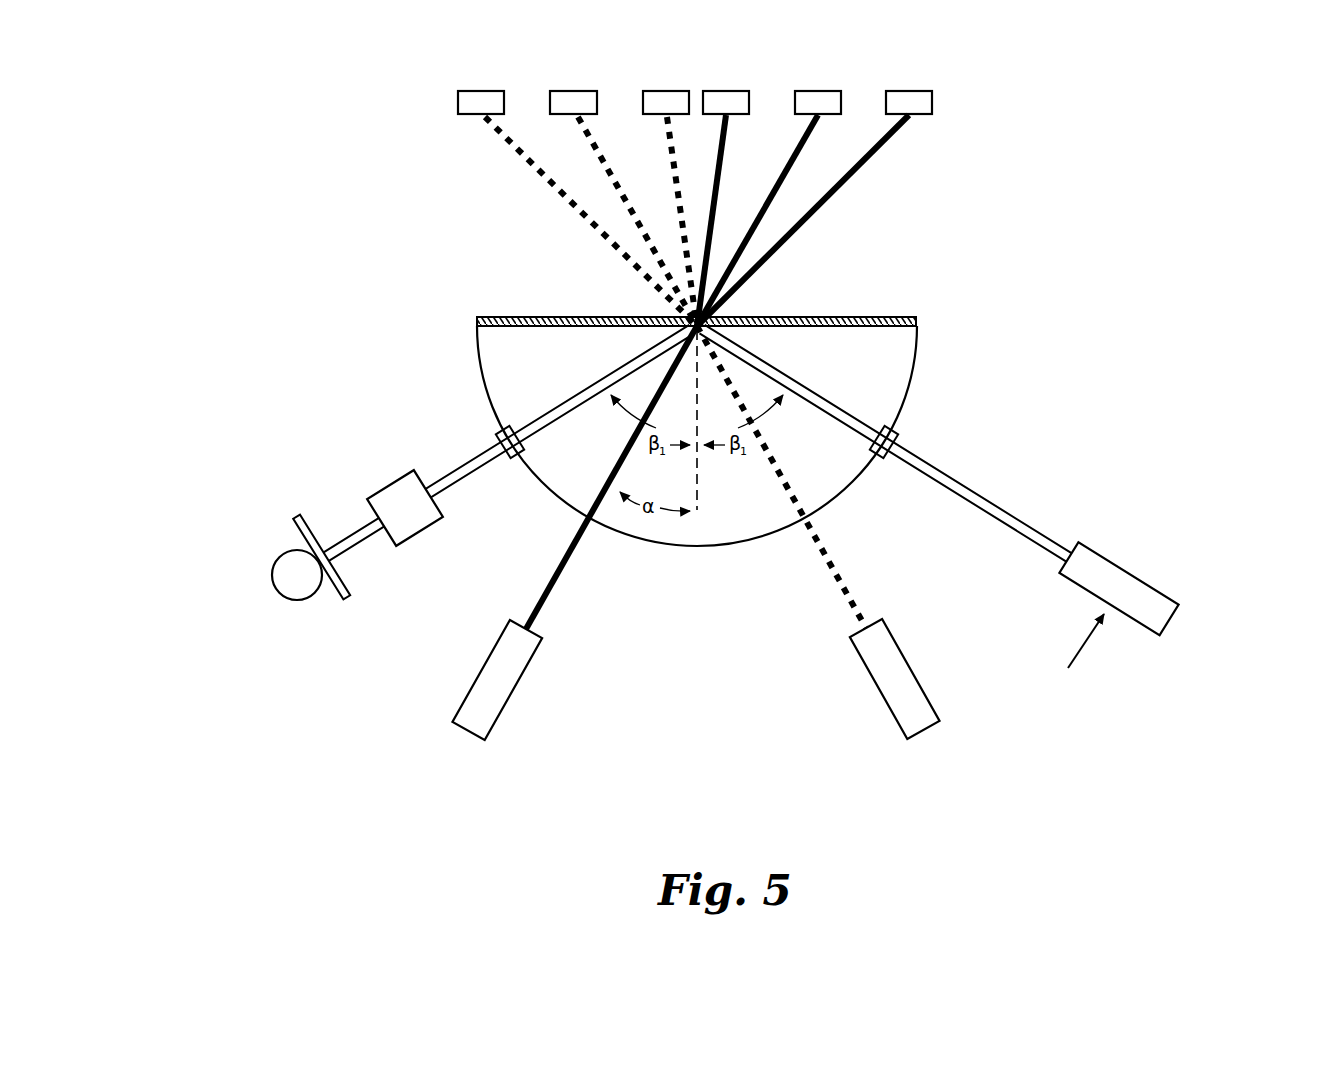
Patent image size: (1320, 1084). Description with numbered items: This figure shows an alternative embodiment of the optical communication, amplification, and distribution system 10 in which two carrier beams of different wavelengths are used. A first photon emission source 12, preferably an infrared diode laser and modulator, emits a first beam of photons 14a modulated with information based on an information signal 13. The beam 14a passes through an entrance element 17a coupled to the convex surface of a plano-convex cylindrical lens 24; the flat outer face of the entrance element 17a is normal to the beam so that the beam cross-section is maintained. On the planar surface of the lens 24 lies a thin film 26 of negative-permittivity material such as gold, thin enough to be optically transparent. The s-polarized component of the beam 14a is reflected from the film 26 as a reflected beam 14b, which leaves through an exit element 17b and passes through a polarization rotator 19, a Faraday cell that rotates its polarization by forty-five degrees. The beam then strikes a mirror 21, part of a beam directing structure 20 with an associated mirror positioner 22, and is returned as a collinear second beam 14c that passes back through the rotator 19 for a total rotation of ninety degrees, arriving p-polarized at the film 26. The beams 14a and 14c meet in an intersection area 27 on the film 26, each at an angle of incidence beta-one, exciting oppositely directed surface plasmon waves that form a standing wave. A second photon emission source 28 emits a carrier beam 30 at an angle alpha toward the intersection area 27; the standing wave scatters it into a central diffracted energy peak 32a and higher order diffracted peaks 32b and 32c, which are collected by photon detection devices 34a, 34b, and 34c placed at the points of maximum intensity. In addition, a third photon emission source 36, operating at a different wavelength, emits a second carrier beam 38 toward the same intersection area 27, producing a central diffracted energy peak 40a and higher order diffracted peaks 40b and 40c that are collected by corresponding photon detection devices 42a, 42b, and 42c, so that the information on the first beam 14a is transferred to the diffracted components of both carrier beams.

The optical communication, amplification, and distribution system 10 is at (1232, 168).
The first photon emission source 12 is at (1120, 564).
The information signal 13 is at (1082, 642).
The first beam of photons 14a is at (965, 486).
The reflected beam 14b is at (508, 443).
The second beam of photons 14c is at (452, 472).
The entrance element 17a is at (897, 445).
The exit element 17b is at (497, 435).
The polarization rotator 19 is at (386, 488).
The beam directing structure 20 is at (437, 479).
The mirror 21 is at (338, 598).
The mirror positioner 22 is at (272, 572).
The plano-convex cylindrical lens 24 is at (908, 392).
The thin film 26 is at (916, 320).
The intersection area 27 is at (730, 316).
The second photon emission source 28 is at (505, 718).
The carrier beam 30 is at (542, 612).
The central diffracted energy peak 32a is at (798, 146).
The higher order diffracted peak 32b is at (880, 148).
The higher order diffracted peak 32c is at (722, 145).
The photon detection device 34a is at (825, 116).
The photon detection device 34b is at (916, 116).
The photon detection device 34c is at (734, 116).
The third photon emission source 36 is at (890, 710).
The second carrier beam 38 is at (856, 614).
The central diffracted energy peak 40a is at (588, 138).
The higher order diffracted peak 40b is at (507, 140).
The higher order diffracted peak 40c is at (668, 140).
The photon detection device 42a is at (565, 116).
The photon detection device 42b is at (465, 116).
The photon detection device 42c is at (653, 116).